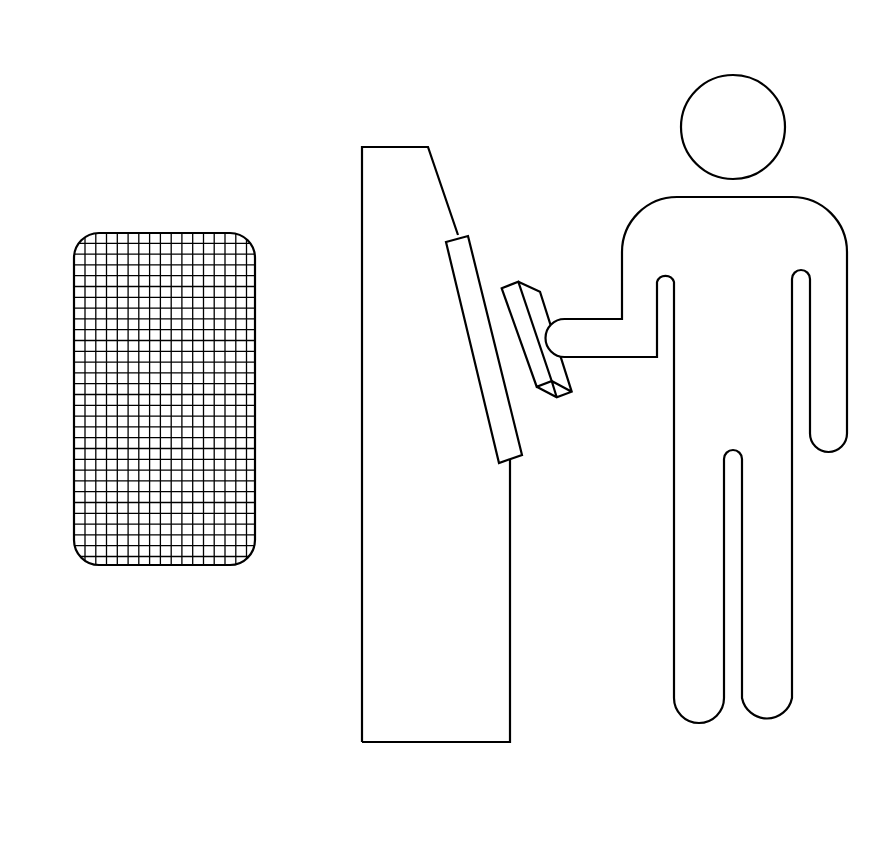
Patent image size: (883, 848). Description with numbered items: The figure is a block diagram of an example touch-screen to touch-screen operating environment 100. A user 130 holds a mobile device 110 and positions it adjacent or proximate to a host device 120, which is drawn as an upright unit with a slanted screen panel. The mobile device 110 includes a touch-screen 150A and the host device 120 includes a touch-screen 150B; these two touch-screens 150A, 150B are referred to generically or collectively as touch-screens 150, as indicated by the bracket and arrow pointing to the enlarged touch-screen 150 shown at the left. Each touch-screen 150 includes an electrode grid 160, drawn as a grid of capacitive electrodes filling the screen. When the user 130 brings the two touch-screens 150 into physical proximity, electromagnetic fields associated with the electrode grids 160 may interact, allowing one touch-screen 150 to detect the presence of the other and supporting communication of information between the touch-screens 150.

The touch-screen to touch-screen operating environment 100 is at (733, 38).
The mobile device 110 is at (532, 287).
The host device 120 is at (431, 389).
The user 130 is at (697, 399).
The touch-screens 150 is at (164, 426).
The touch-screen 150A is at (543, 400).
The touch-screen 150B is at (530, 438).
The electrode grid 160 is at (133, 535).